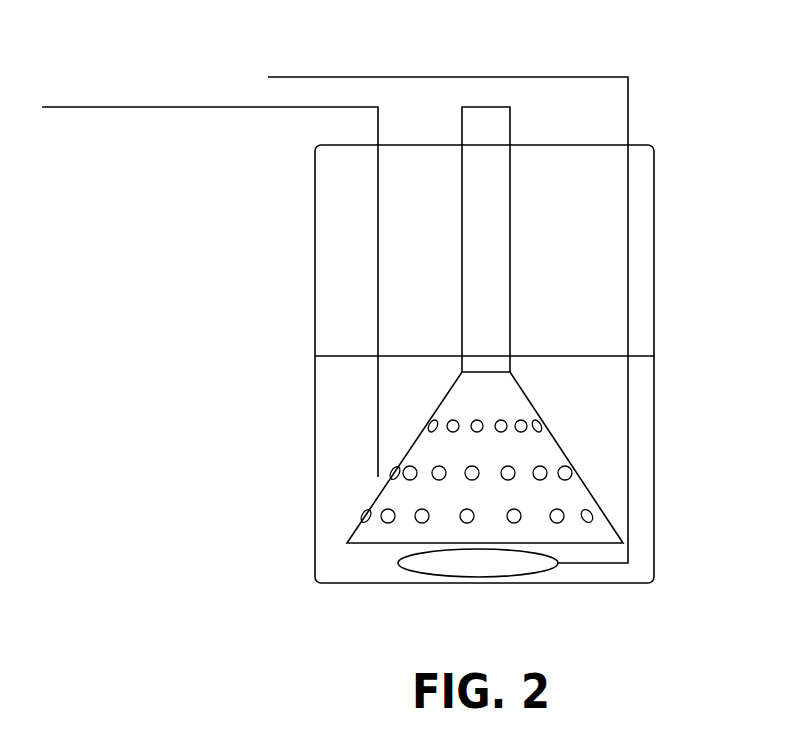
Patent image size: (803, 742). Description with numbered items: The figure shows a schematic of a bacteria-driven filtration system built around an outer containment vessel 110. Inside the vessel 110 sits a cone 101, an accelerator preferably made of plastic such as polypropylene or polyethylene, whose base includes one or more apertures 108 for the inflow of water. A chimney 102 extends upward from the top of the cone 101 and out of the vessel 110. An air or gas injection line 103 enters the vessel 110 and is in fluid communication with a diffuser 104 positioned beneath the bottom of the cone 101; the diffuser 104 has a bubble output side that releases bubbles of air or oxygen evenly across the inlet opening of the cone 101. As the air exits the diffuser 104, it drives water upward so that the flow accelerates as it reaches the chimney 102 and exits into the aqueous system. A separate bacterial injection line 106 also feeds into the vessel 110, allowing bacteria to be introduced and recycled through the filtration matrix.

The cone 101 is at (490, 462).
The chimney 102 is at (510, 135).
The air or gas injection line 103 is at (461, 75).
The diffuser 104 is at (418, 570).
The bacterial injection line 106 is at (214, 110).
The apertures 108 is at (563, 468).
The containment vessel 110 is at (656, 237).